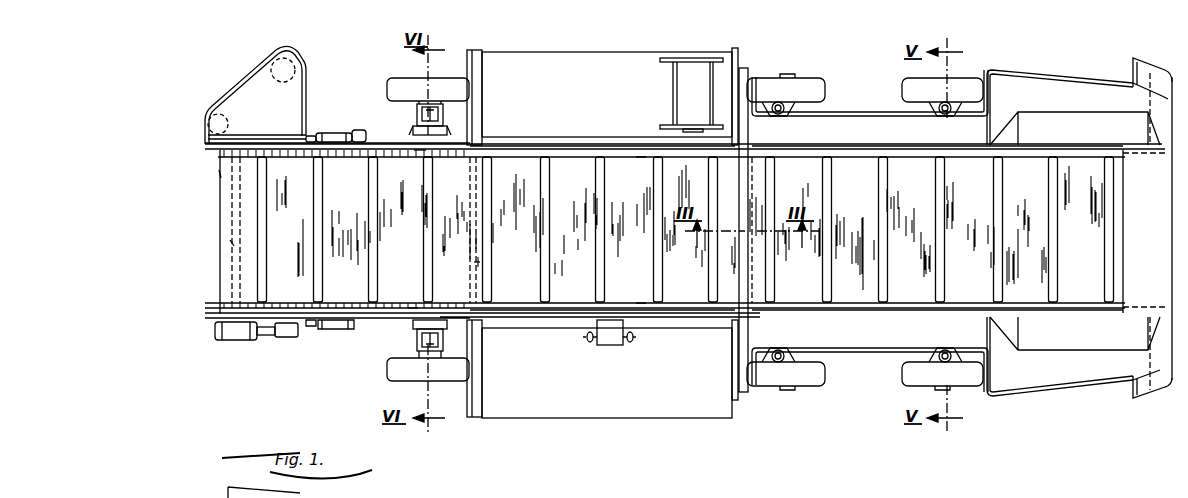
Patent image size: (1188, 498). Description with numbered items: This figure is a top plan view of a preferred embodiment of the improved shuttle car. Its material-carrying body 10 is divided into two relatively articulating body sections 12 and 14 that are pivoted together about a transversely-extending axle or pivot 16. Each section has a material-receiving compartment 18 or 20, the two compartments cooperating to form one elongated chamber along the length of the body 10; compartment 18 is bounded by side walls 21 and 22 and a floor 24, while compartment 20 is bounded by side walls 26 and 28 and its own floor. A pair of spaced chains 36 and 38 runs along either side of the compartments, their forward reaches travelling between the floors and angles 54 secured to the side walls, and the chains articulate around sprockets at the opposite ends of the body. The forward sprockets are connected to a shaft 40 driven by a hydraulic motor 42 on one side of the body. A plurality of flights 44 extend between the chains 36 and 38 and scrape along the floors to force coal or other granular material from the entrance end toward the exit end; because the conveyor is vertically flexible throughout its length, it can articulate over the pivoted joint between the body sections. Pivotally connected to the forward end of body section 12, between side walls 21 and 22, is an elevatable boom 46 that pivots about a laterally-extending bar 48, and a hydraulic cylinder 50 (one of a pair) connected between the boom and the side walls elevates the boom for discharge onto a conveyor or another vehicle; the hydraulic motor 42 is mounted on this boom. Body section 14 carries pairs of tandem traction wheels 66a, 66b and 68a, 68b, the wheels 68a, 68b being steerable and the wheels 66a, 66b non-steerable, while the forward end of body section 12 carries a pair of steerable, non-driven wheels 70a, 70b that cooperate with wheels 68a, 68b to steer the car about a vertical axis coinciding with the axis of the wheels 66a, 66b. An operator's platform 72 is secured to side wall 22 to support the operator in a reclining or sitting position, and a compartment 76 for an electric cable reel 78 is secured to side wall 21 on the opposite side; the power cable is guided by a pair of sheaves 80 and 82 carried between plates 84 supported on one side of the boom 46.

The material-carrying body 10 is at (405, 320).
The body section 12 is at (392, 143).
The body section 14 is at (860, 115).
The axle or pivot 16 is at (752, 270).
The material-receiving compartment 18 is at (588, 231).
The material-receiving compartment 20 is at (928, 235).
The side wall 21 is at (590, 143).
The side wall 22 is at (565, 312).
The floor 24 is at (615, 340).
The side wall 26 is at (882, 145).
The side wall 28 is at (885, 312).
The chain 36 is at (420, 152).
The chain 38 is at (413, 305).
The shaft 40 is at (232, 243).
The hydraulic motor 42 is at (287, 331).
The flights 44 is at (368, 244).
The elevatable boom 46 is at (222, 174).
The axle or bar 48 is at (478, 264).
The hydraulic cylinder 50 is at (333, 130).
The angles 54 is at (642, 158).
The traction wheel 66a is at (812, 384).
The traction wheel 66b is at (800, 85).
The traction wheel 68a is at (965, 390).
The traction wheel 68b is at (968, 92).
The steerable non-driven wheel 70a is at (387, 377).
The steerable non-driven wheel 70b is at (398, 78).
The operator's platform 72 is at (600, 405).
The compartment 76 is at (595, 70).
The electric cable reel 78 is at (702, 58).
The sheave 80 is at (297, 56).
The sheave 82 is at (206, 128).
The plates 84 is at (252, 78).